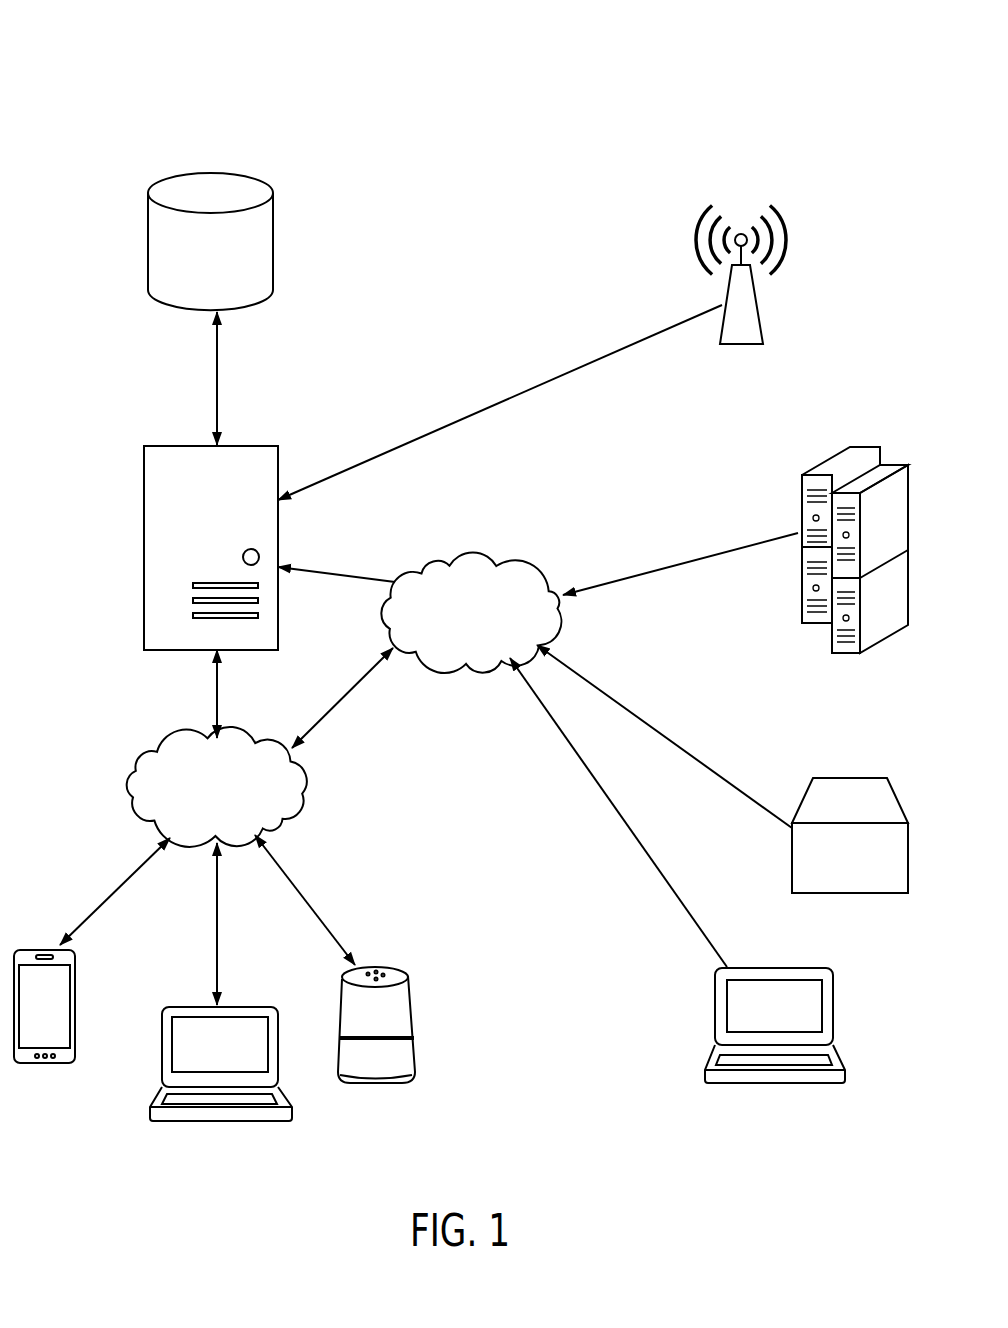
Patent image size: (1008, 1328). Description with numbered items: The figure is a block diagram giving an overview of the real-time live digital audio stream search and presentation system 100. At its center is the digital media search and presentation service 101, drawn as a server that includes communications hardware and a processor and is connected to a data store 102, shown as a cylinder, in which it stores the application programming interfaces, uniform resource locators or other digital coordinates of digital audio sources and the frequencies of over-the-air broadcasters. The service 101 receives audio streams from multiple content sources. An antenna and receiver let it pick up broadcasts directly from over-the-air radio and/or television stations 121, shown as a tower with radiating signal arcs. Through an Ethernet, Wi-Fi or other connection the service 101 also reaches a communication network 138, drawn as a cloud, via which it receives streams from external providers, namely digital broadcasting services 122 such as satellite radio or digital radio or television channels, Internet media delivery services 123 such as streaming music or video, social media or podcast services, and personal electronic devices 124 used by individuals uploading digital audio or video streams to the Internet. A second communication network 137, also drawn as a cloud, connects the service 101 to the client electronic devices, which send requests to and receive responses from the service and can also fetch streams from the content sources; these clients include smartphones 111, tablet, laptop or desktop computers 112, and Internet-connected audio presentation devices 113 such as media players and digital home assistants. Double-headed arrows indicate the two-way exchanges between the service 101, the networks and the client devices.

The real-time live digital audio stream search and presentation system 100 is at (170, 80).
The digital media search and presentation service 101 is at (144, 538).
The data store 102 is at (148, 250).
The smartphones 111 is at (60, 1067).
The tablet, laptop or desktop computers 112 is at (200, 1122).
The Internet-connected audio presentation devices 113 is at (378, 1086).
The over-the-air radio and/or television stations 121 is at (743, 346).
The digital broadcasting services 122 is at (843, 650).
The Internet media delivery services 123 is at (862, 895).
The personal electronic devices 124 is at (752, 1085).
The communication network 137 is at (150, 752).
The communication network 138 is at (473, 558).